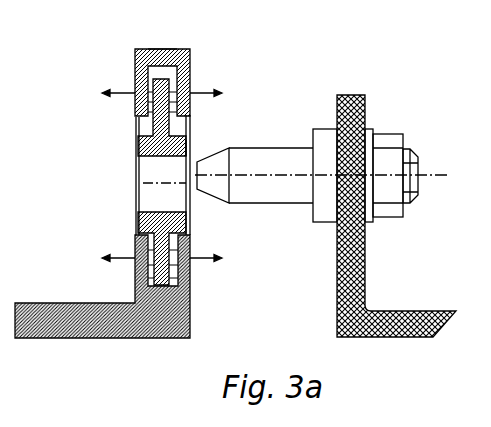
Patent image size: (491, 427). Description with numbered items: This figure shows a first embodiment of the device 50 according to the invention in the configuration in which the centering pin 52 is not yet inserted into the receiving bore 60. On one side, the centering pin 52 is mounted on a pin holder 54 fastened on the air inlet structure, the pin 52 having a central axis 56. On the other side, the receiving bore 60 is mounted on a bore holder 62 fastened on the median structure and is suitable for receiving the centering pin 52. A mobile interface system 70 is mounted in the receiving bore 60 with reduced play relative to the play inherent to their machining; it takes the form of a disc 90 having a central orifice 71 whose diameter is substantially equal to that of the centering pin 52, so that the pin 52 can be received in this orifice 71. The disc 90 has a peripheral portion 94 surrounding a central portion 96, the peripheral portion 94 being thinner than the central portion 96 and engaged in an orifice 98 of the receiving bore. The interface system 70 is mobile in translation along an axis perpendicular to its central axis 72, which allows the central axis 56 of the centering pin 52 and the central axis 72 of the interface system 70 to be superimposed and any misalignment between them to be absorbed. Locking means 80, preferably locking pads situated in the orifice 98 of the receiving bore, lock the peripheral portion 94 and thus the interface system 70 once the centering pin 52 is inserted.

The device 50 is at (303, 75).
The centering pin 52 is at (276, 160).
The pin holder 54 is at (365, 100).
The central axis of the centering pin 56 is at (432, 173).
The receiving bore 60 is at (151, 122).
The bore holder 62 is at (135, 61).
The interface system 70 is at (160, 148).
The central orifice 71 is at (153, 172).
The central axis of the interface system 72 is at (160, 188).
The locking means 80 is at (190, 76).
The disc 90 is at (138, 216).
The peripheral portion 94 is at (173, 107).
The central portion 96 is at (181, 134).
The orifice of the receiving bore 98 is at (167, 52).